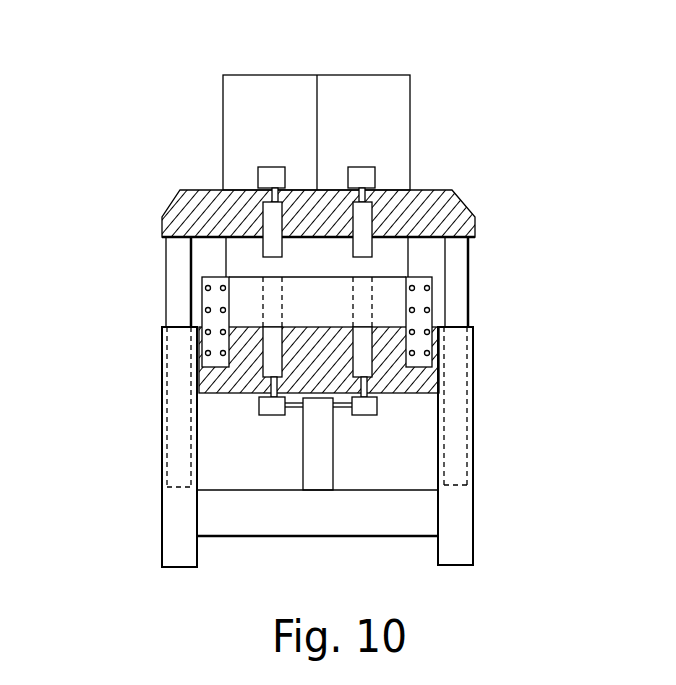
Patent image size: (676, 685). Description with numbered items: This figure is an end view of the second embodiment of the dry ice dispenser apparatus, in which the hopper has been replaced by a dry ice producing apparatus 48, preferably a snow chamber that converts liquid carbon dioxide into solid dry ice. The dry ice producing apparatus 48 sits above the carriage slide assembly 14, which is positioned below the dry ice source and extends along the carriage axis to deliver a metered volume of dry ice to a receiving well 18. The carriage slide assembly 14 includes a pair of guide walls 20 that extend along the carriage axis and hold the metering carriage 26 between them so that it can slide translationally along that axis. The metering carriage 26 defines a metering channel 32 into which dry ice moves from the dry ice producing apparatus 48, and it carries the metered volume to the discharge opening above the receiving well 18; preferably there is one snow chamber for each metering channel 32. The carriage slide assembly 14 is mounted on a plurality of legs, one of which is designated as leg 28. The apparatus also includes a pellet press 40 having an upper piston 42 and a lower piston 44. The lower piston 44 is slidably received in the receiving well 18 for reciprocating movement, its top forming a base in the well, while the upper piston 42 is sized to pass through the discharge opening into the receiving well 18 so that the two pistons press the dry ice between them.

The carriage slide assembly 14 is at (432, 296).
The receiving well 18 is at (207, 377).
The guide walls 20 is at (207, 297).
The metering carriage 26 is at (248, 288).
The leg 28 is at (457, 522).
The metering channel 32 is at (362, 295).
The pellet press 40 is at (486, 190).
The upper piston 42 is at (268, 225).
The lower piston 44 is at (275, 352).
The dry ice producing apparatus 48 is at (267, 87).